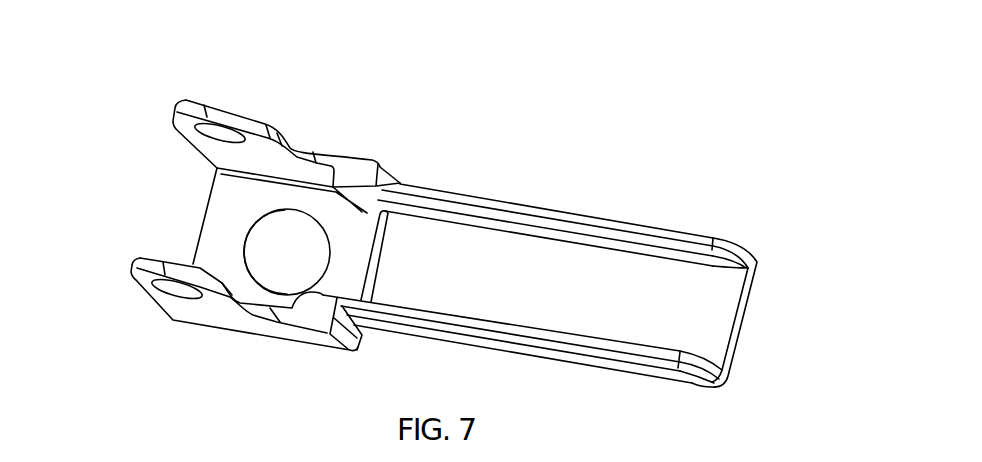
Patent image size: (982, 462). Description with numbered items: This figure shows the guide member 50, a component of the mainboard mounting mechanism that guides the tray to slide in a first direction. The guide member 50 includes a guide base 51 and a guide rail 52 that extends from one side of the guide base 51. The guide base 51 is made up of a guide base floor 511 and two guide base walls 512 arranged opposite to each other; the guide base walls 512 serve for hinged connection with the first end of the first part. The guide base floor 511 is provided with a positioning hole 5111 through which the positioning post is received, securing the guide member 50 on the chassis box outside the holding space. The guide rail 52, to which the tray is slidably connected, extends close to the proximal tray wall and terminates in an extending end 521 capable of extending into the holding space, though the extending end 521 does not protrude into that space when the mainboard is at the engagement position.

The guide member 50 is at (743, 78).
The guide base 51 is at (373, 78).
The guide base floor 511 is at (223, 185).
The positioning hole 5111 is at (268, 250).
The guide base wall 512 is at (232, 153).
The guide rail 52 is at (573, 249).
The extending end 521 is at (743, 313).